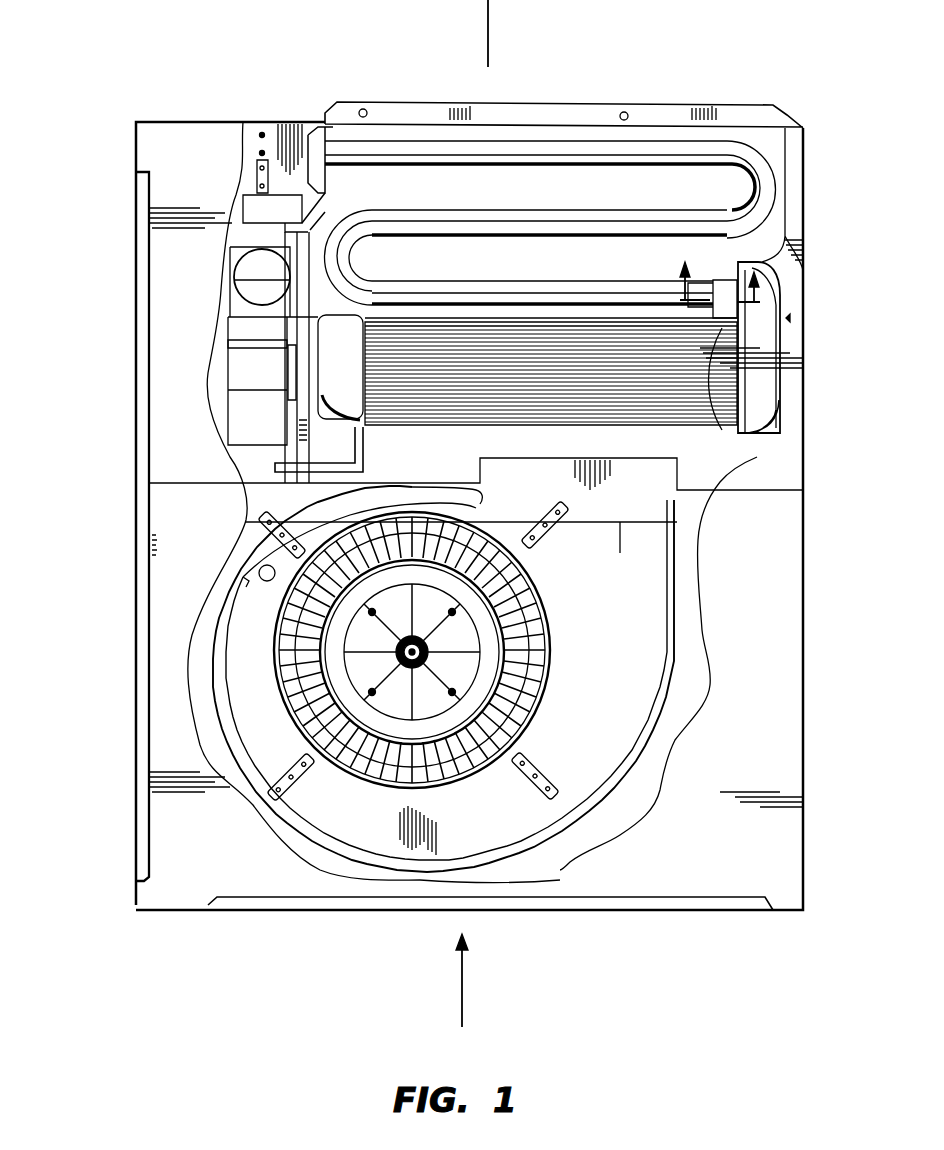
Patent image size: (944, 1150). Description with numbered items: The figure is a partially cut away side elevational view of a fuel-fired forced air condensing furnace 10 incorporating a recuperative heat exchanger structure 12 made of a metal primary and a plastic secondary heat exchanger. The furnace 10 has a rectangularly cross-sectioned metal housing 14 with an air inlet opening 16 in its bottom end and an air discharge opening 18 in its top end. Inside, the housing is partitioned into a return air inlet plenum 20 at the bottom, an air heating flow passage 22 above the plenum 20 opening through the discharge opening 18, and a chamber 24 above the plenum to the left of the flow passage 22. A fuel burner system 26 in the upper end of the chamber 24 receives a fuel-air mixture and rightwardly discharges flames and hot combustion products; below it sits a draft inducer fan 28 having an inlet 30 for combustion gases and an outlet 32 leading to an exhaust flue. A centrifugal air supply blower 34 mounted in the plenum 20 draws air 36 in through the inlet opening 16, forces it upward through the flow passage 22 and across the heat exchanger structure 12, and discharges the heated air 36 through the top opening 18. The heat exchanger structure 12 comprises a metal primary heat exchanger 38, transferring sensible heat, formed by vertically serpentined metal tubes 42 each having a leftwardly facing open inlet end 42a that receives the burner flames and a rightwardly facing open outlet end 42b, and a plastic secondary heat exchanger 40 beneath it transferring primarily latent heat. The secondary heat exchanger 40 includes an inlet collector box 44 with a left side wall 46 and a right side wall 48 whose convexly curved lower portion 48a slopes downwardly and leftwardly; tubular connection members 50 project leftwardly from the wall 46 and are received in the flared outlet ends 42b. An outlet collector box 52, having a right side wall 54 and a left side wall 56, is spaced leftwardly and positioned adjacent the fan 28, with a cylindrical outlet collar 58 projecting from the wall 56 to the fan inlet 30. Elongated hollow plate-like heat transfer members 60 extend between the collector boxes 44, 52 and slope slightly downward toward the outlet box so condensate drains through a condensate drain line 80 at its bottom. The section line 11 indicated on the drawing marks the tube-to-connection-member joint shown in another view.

The fuel-fired forced air condensing furnace 10 is at (128, 503).
The section line 11 is at (723, 294).
The recuperative heat exchanger structure 12 is at (528, 128).
The metal housing 14 is at (138, 733).
The air inlet opening 16 is at (288, 908).
The air discharge opening 18 is at (646, 104).
The return air inlet plenum 20 is at (685, 680).
The air heating flow passage 22 is at (753, 453).
The chamber 24 is at (247, 226).
The fuel burner system 26 is at (292, 126).
The draft inducer fan 28 is at (222, 344).
The inlet 30 is at (300, 317).
The outlet 32 is at (245, 231).
The centrifugal air supply blower 34 is at (640, 748).
The air 36 is at (490, 34).
The metal primary heat exchanger 38 is at (743, 136).
The plastic secondary heat exchanger 40 is at (786, 321).
The serpentined metal tubes 42 is at (670, 150).
The open inlet end 42a is at (337, 153).
The open outlet end 42b is at (700, 280).
The inlet collector box 44 is at (768, 374).
The left side wall 46 is at (712, 420).
The right side wall 48 is at (782, 346).
The convexly curved lower portion 48a is at (770, 416).
The tubular connection members 50 is at (750, 268).
The outlet collector box 52 is at (347, 322).
The right side wall 54 is at (395, 328).
The left side wall 56 is at (297, 366).
The cylindrical outlet collar 58 is at (294, 398).
The hollow heat transfer members 60 is at (450, 425).
The condensate drain line 80 is at (365, 448).